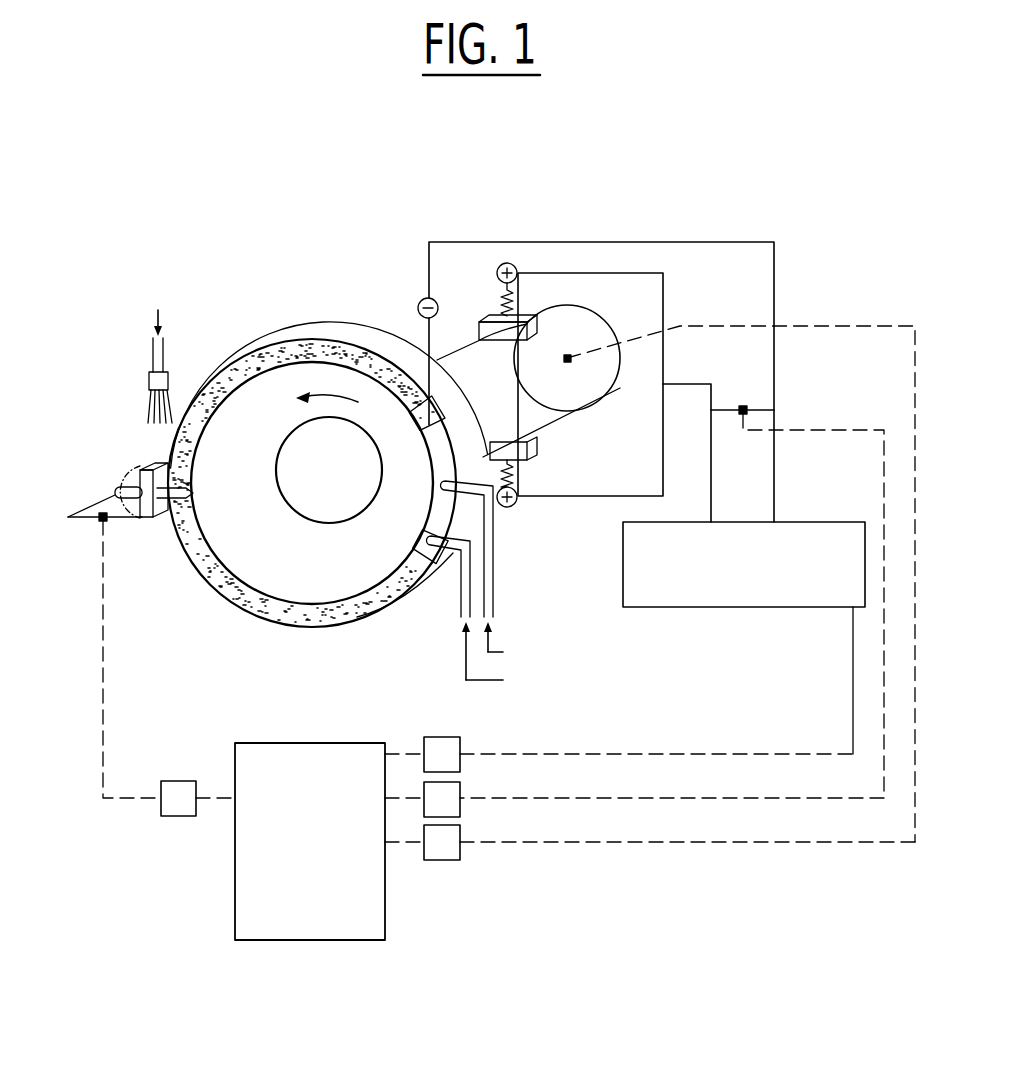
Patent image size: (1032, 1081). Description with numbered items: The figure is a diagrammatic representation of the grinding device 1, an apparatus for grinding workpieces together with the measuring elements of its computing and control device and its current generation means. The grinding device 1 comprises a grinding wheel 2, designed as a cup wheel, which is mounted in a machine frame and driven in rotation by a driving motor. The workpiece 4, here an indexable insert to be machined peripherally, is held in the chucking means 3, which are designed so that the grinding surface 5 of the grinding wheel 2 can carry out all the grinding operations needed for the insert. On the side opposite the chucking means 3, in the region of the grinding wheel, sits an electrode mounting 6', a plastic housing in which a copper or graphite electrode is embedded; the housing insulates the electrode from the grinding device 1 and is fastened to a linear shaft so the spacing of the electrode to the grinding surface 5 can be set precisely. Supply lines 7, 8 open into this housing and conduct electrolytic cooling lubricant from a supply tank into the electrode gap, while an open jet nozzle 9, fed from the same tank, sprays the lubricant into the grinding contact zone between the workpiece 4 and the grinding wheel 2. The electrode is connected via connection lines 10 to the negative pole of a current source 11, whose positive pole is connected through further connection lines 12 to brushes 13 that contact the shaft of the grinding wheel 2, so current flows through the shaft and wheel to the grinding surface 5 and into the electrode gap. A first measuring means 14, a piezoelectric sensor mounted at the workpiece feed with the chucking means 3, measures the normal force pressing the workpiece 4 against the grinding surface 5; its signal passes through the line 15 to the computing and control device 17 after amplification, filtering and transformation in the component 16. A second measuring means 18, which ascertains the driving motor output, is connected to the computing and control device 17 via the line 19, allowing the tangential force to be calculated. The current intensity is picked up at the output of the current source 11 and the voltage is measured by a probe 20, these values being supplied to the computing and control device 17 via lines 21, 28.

The grinding device 1 is at (292, 243).
The grinding wheel 2 is at (367, 335).
The chucking means 3 is at (131, 490).
The workpiece 4 is at (120, 527).
The grinding surface 5 is at (273, 342).
The electrode mounting 6' is at (389, 555).
The supply line 7 is at (501, 597).
The supply line 8 is at (444, 624).
The open jet nozzle 9 is at (163, 380).
The connection lines 10 is at (702, 236).
The current source 11 is at (759, 586).
The further connection lines 12 is at (608, 265).
The brushes 13 is at (486, 328).
The first measuring means 14 is at (103, 517).
The line 15 is at (109, 642).
The component 16 is at (168, 792).
The computing and control device 17 is at (326, 849).
The second measuring means 18 is at (566, 353).
The line 19 is at (821, 849).
The probe 20 is at (741, 552).
The line 21 is at (729, 790).
The line 28 is at (658, 746).